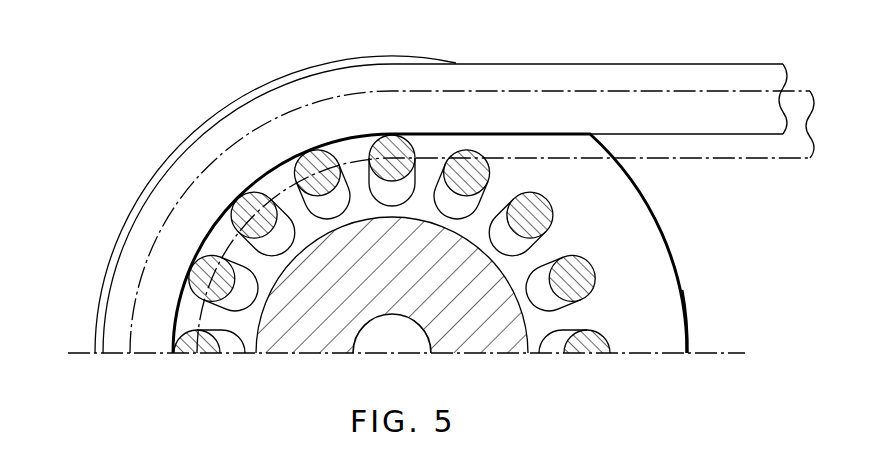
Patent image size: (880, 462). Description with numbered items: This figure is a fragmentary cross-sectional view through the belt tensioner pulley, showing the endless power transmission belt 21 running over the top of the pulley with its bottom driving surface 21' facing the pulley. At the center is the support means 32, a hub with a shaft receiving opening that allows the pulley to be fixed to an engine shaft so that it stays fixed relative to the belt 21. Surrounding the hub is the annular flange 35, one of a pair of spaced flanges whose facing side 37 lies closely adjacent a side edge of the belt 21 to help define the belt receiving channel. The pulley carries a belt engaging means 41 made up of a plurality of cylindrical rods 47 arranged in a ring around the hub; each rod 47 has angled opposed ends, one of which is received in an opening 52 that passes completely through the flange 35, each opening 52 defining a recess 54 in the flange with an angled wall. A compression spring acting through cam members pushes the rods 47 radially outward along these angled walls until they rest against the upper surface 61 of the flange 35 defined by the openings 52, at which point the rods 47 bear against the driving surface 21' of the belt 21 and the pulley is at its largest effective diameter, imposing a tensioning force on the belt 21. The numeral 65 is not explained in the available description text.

The endless power transmission belt 21 is at (441, 187).
The bottom driving surface 21' is at (472, 222).
The support means 32 is at (323, 340).
The annular flange 35 is at (683, 293).
The facing side 37 is at (668, 328).
The belt engaging means 41 is at (573, 256).
The cylindrical rods 47 is at (243, 197).
The opening 52 is at (590, 273).
The recess 54 is at (257, 293).
The upper surface 61 is at (395, 136).
The cage pocket 65 is at (494, 244).